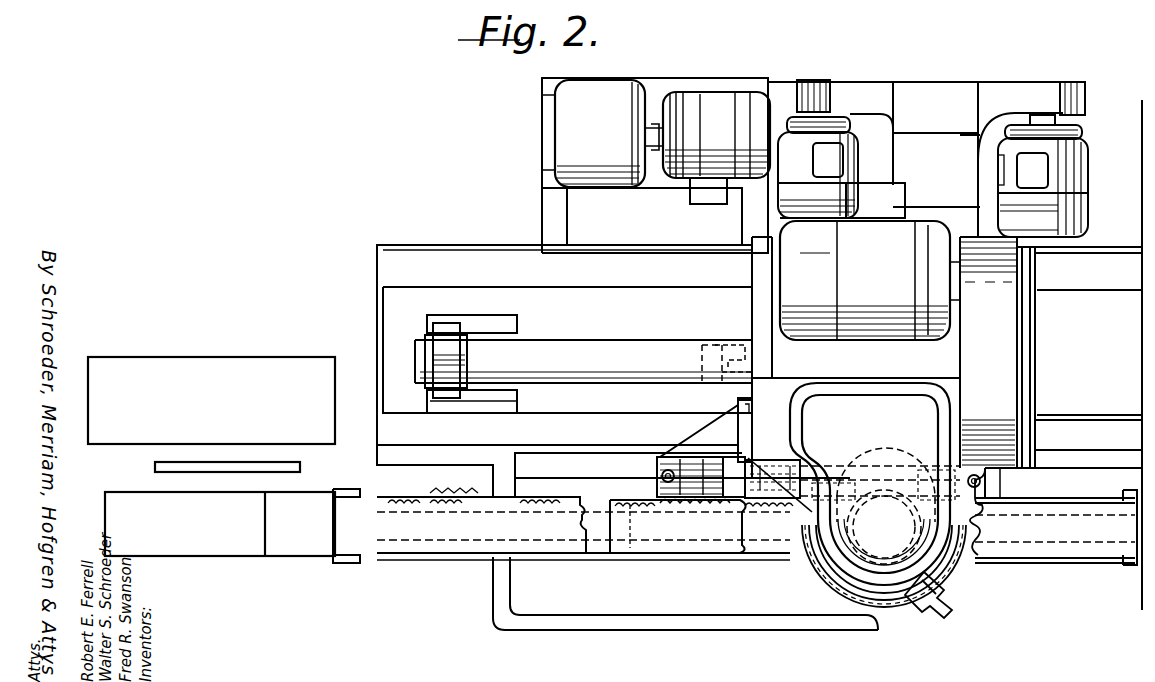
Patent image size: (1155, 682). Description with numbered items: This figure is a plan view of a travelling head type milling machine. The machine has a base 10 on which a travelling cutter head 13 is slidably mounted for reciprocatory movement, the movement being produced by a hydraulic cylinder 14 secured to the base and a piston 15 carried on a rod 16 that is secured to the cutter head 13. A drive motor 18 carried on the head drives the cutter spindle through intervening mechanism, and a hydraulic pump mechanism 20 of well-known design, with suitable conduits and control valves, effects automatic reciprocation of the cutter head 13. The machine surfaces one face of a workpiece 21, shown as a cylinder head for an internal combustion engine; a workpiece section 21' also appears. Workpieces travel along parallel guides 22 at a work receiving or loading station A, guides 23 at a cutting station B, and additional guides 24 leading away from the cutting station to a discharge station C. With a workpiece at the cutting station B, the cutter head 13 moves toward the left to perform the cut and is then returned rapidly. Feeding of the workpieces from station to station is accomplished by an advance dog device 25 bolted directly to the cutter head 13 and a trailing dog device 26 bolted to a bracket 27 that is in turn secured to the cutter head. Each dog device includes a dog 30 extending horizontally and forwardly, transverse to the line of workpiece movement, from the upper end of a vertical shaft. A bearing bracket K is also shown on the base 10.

The base 10 is at (380, 262).
The travelling cutter head 13 is at (880, 366).
The hydraulic cylinder 14 is at (548, 344).
The piston 15 is at (708, 352).
The rod 16 is at (737, 350).
The drive motor 18 is at (880, 274).
The hydraulic pump mechanism 20 is at (663, 92).
The workpiece 21 is at (757, 531).
The tube section 21' is at (655, 517).
The parallel guides 22 is at (345, 545).
The guides 23 is at (645, 555).
The guides 24 is at (966, 548).
The advance dog device 25 is at (998, 484).
The trailing dog device 26 is at (682, 470).
The bracket 27 is at (712, 430).
The dog 30 is at (668, 490).
The bearing bracket K is at (471, 356).
The work receiving or loading station A is at (423, 581).
The cutting station B is at (751, 578).
The discharge station C is at (1042, 578).